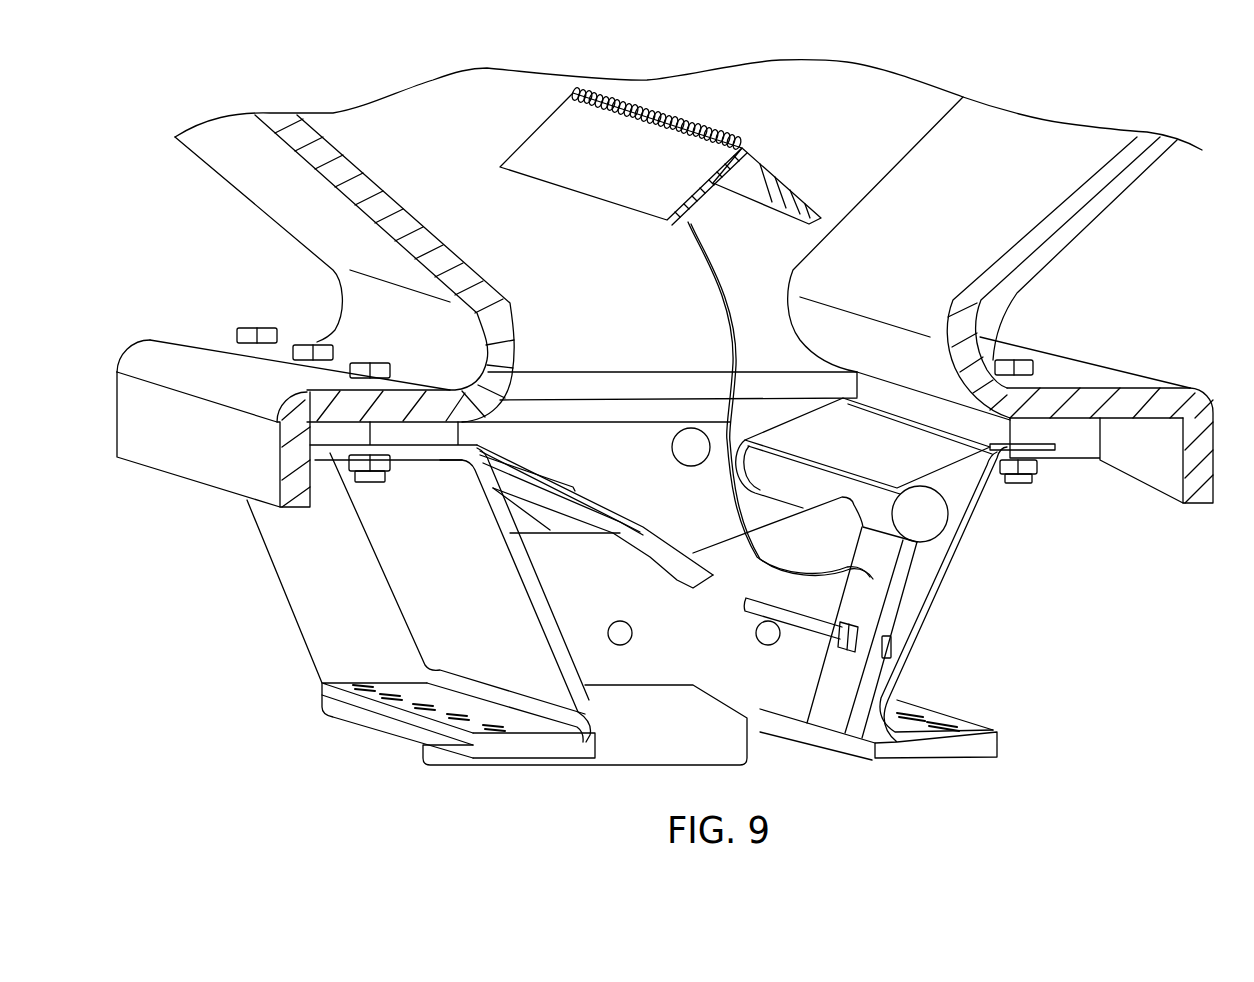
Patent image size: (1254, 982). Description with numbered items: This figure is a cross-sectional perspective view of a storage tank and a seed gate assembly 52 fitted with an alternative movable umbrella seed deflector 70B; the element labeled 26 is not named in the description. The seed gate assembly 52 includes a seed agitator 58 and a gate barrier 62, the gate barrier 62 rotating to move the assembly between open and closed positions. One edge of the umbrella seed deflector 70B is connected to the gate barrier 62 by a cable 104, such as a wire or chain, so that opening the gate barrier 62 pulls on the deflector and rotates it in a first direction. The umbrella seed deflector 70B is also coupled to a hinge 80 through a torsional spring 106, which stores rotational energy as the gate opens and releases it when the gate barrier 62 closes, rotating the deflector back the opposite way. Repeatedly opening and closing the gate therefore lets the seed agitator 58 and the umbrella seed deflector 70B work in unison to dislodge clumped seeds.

The hopper wall panel 26 is at (260, 183).
The umbrella seed deflector 70B is at (533, 133).
The hinge 80 is at (690, 123).
The torsional spring 106 is at (666, 110).
The seed gate assembly 52 is at (427, 563).
The seed agitator 58 is at (800, 623).
The gate barrier 62 is at (833, 698).
The cable 104 is at (757, 558).